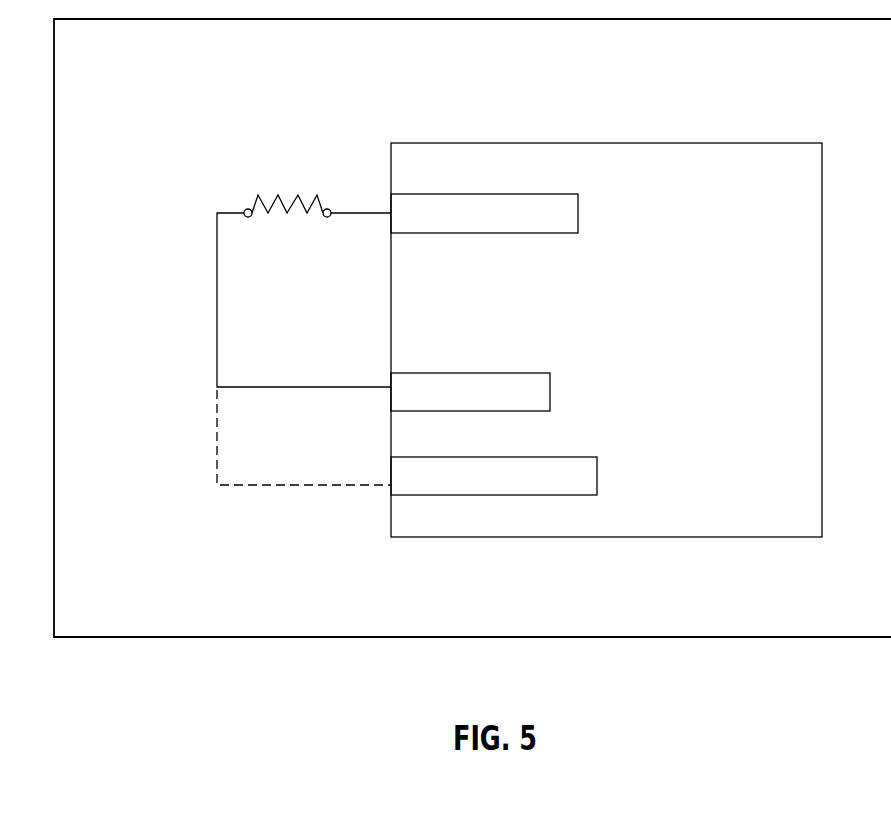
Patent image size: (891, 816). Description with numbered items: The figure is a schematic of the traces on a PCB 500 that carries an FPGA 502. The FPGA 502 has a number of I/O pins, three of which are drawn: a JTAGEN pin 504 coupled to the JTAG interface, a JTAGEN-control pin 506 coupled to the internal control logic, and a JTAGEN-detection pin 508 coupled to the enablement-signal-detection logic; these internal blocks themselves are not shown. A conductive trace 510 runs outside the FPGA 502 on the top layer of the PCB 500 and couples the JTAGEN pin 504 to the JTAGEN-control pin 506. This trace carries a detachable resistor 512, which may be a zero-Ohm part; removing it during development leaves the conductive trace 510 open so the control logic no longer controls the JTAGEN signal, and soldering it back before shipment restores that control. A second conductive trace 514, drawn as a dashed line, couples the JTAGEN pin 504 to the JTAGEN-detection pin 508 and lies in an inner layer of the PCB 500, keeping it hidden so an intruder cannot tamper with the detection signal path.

The PCB 500 is at (510, 70).
The FPGA 502 is at (664, 352).
The JTAGEN pin 504 is at (550, 387).
The JTAGEN-control pin 506 is at (578, 213).
The JTAGEN-detection pin 508 is at (597, 470).
The conductive trace 510 is at (217, 272).
The detachable resistor 512 is at (283, 203).
The conductive trace 514 is at (270, 486).